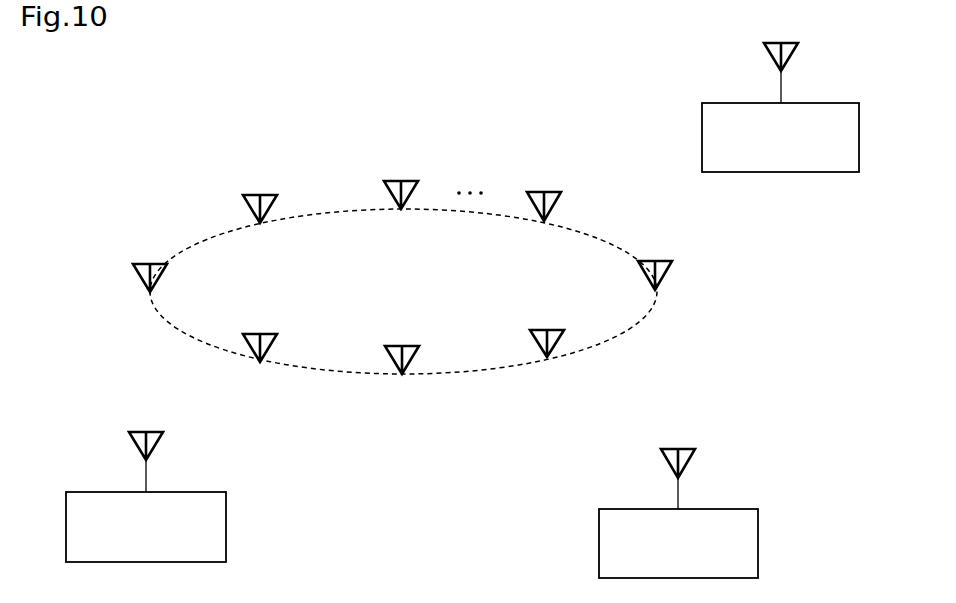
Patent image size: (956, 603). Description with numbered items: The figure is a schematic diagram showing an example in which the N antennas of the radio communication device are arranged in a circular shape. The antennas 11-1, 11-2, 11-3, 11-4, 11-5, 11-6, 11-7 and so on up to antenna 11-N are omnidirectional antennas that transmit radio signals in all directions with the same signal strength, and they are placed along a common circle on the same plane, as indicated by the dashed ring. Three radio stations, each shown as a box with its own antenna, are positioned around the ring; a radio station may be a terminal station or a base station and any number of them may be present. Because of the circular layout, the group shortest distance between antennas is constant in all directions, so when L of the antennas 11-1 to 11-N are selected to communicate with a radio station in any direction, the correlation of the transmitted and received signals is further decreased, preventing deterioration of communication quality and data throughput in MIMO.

The antenna 11-1 is at (658, 258).
The antenna 11-2 is at (551, 327).
The antenna 11-3 is at (406, 343).
The antenna 11-4 is at (263, 331).
The antenna 11-5 is at (153, 262).
The antenna 11-6 is at (263, 191).
The antenna 11-7 is at (404, 178).
The antenna 11-N is at (547, 190).